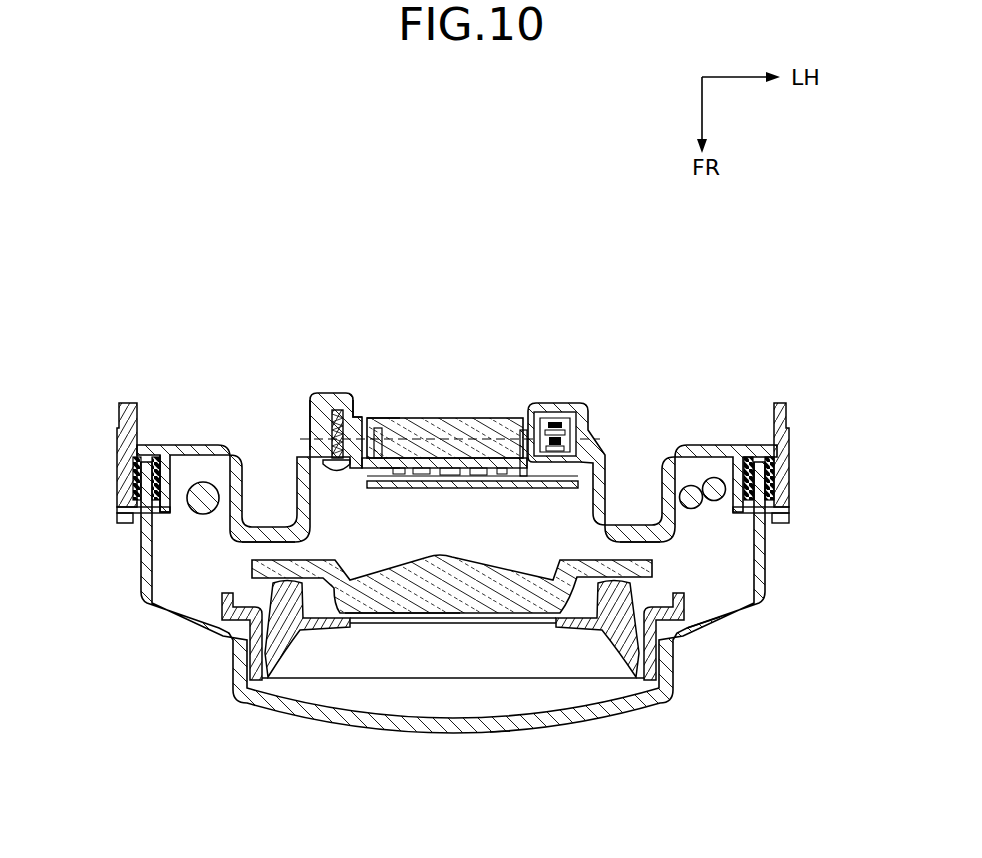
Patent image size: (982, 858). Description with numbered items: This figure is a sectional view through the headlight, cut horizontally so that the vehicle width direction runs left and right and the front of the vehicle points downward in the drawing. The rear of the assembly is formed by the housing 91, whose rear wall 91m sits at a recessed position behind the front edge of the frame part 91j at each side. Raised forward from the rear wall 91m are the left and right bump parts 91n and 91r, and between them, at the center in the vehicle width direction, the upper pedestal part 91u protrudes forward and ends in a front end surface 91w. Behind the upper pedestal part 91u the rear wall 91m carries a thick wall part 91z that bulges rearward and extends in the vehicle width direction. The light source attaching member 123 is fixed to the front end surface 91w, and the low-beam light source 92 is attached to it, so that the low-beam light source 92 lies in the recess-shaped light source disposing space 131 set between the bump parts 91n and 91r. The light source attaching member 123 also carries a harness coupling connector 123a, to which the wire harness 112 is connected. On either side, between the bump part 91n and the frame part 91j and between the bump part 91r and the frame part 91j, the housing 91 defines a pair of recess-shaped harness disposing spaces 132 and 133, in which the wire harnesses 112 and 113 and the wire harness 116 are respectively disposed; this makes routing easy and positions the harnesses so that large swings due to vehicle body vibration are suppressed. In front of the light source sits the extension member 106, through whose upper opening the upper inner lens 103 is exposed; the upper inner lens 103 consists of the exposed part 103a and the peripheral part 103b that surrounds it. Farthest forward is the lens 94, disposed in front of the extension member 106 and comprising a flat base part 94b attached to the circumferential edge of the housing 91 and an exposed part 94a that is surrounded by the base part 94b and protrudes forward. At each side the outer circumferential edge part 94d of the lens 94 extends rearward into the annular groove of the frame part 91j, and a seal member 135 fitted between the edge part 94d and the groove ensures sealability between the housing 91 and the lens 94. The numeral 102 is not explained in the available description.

The housing 91 is at (181, 435).
The frame part 91j is at (116, 490).
The rear wall 91m is at (362, 433).
The bump part 91n is at (643, 536).
The bump part 91r is at (236, 545).
The upper pedestal part 91u is at (304, 452).
The front end surface 91w is at (392, 470).
The thick wall part 91z is at (400, 417).
The low-beam light source 92 is at (452, 480).
The lens 94 is at (372, 727).
The exposed part 94a is at (500, 733).
The flat base part 94b is at (700, 636).
The outer circumferential edge part 94d is at (762, 488).
The circuit board 102 is at (570, 482).
The upper inner lens 103 is at (513, 622).
The exposed part 103a is at (421, 618).
The peripheral part 103b is at (266, 580).
The extension member 106 is at (246, 658).
The wire harness 112 is at (686, 485).
The wire harness 113 is at (717, 477).
The wire harness 116 is at (203, 481).
The light source attaching member 123 is at (472, 416).
The harness coupling connector 123a is at (581, 411).
The light source disposing space 131 is at (337, 478).
The harness disposing space 132 is at (708, 518).
The harness disposing space 133 is at (180, 500).
The seal member 135 is at (780, 460).